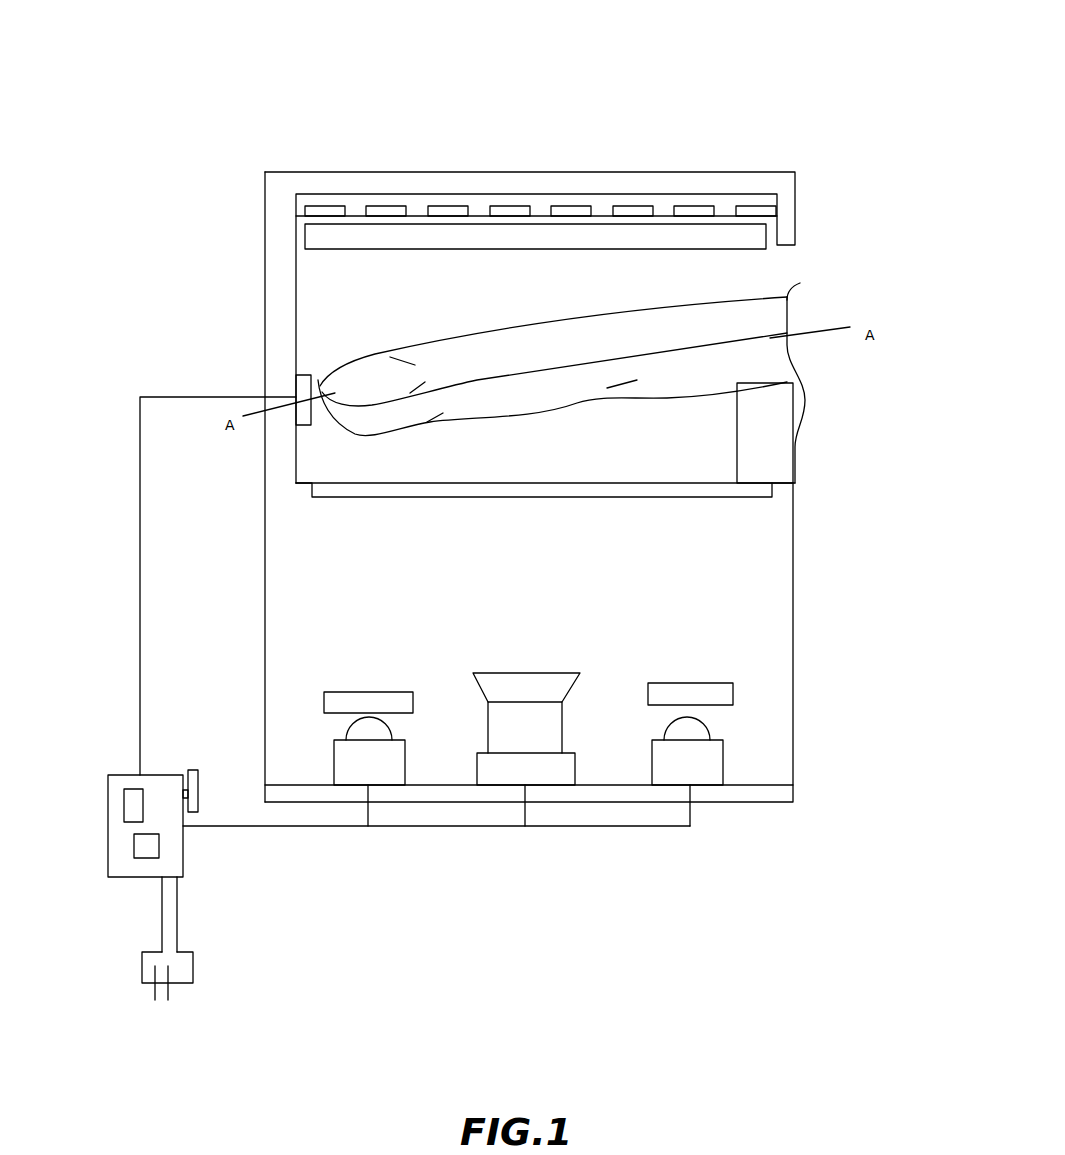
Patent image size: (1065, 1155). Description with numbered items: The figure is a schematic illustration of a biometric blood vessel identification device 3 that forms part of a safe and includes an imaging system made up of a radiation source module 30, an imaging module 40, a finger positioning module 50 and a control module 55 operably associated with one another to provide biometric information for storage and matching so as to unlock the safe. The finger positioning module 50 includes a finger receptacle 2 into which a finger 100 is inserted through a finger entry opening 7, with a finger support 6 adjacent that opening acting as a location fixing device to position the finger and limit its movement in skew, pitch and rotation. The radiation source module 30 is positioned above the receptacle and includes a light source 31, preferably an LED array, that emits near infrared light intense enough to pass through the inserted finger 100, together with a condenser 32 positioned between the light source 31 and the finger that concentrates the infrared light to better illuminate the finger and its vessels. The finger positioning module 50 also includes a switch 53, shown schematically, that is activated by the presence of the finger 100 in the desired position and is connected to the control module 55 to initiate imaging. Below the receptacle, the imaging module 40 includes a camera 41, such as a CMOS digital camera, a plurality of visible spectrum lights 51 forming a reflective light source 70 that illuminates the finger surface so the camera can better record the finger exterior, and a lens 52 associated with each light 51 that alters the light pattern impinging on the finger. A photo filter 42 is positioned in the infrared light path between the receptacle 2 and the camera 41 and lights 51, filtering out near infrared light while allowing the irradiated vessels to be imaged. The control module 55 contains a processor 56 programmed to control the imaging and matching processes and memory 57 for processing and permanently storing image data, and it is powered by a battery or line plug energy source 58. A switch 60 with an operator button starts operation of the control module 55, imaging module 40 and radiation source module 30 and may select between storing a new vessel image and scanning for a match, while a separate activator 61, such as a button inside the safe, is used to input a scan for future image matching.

The finger receptacle 2 is at (348, 285).
The identification device 3 is at (688, 170).
The finger support 6 is at (767, 430).
The finger entry opening 7 is at (778, 284).
The radiation source module 30 is at (536, 130).
The light source 31 is at (548, 203).
The condenser 32 is at (760, 250).
The imaging module 40 is at (772, 703).
The camera 41 is at (540, 763).
The filter 42 is at (720, 510).
The finger positioning module 50 is at (529, 426).
The lights 51 is at (360, 762).
The lens 52 is at (367, 690).
The switch 53 is at (302, 375).
The control module 55 is at (142, 855).
The processor 56 is at (124, 805).
The memory 57 is at (134, 846).
The energy source 58 is at (150, 983).
The switch 60 is at (192, 768).
The activator 61 is at (162, 790).
The reflective light source 70 is at (495, 749).
The finger 100 is at (770, 362).